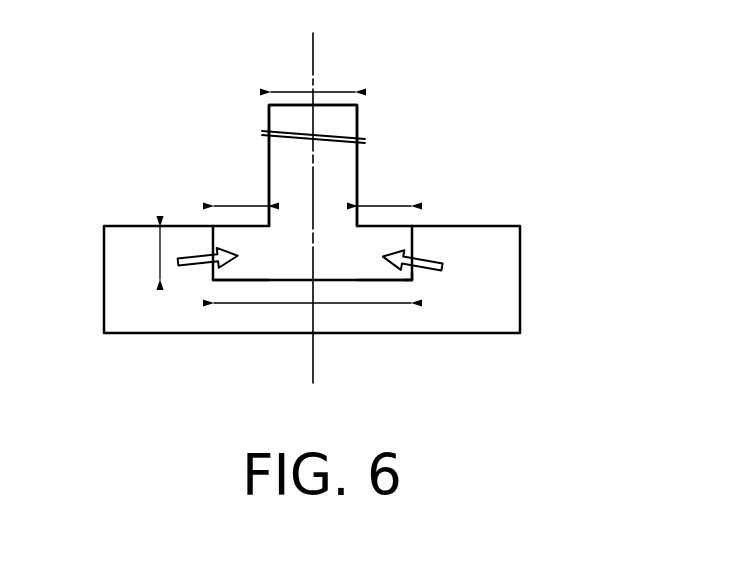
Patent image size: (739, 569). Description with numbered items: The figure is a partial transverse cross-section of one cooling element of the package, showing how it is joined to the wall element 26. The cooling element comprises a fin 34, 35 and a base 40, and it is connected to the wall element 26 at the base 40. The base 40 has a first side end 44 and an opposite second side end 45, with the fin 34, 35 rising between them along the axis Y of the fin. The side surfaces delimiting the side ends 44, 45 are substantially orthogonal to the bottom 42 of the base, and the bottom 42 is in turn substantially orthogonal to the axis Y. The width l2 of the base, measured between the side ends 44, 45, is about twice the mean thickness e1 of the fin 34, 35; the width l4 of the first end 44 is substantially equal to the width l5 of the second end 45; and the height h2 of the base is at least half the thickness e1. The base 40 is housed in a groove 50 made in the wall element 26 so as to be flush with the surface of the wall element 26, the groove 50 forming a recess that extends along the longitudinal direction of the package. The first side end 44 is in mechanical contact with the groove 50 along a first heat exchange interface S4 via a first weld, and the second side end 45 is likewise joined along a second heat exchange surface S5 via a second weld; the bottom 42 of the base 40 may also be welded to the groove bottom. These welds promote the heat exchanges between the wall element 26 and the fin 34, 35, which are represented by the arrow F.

The wall element 26 is at (500, 258).
The fin 34 is at (350, 166).
The fin 35 is at (350, 166).
The base 40 is at (293, 250).
The bottom of the base 42 is at (302, 272).
The first side end 44 is at (228, 238).
The second side end 45 is at (397, 237).
The groove 50 is at (416, 282).
The arrow F is at (427, 256).
The first heat exchange interface S4 is at (214, 273).
The second heat exchange surface S5 is at (417, 275).
The axis of the fin Y is at (311, 211).
The mean thickness of the fin e1 is at (314, 91).
The height of the base h2 is at (158, 250).
The width of the base l2 is at (272, 304).
The width of the first end l4 is at (240, 206).
The width of the second end l5 is at (386, 206).